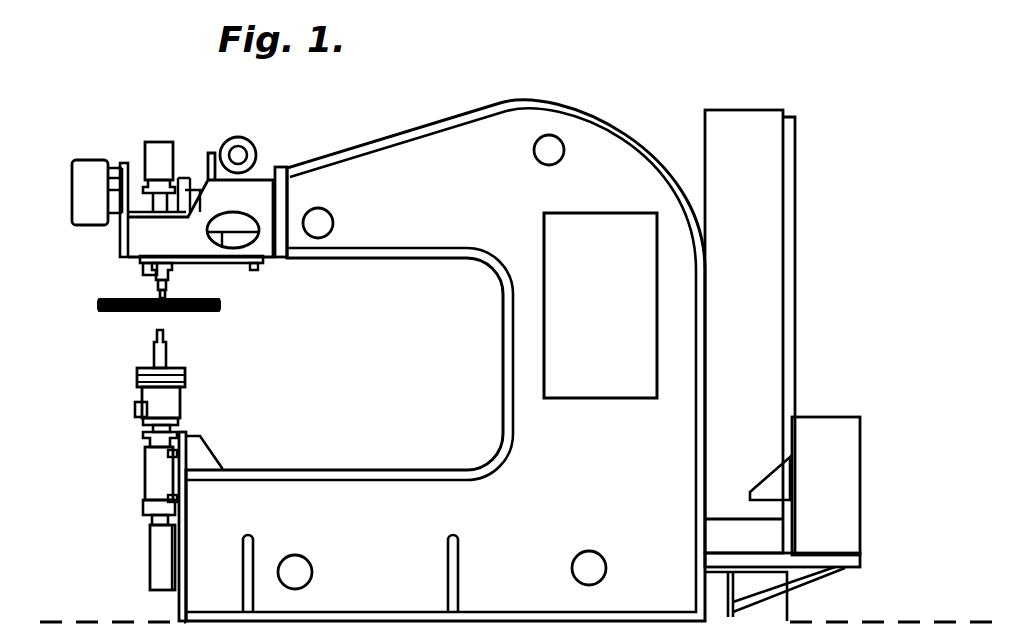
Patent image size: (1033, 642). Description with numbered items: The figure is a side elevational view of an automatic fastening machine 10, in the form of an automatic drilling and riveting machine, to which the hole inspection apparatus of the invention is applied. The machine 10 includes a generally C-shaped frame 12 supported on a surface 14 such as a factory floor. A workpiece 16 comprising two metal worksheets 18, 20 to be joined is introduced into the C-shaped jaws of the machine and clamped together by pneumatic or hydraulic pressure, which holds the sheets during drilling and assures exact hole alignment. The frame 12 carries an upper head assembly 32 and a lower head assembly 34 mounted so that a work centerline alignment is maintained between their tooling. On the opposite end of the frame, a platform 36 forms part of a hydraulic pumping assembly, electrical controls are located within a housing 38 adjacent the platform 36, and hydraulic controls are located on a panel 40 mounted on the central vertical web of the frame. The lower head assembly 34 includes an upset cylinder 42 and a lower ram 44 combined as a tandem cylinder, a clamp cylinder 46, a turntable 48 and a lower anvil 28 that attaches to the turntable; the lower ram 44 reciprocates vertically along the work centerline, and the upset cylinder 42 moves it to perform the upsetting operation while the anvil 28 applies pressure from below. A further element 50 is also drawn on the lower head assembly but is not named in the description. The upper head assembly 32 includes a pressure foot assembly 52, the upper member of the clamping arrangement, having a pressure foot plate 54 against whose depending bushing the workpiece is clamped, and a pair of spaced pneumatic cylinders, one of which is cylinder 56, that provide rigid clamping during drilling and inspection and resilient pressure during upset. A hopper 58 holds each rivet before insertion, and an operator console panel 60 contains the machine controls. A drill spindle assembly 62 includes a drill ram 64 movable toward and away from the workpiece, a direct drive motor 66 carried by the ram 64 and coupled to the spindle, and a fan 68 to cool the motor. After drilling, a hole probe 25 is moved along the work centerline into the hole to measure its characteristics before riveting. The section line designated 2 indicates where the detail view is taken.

The automatic fastening machine 10 is at (636, 102).
The C-shaped frame 12 is at (418, 204).
The surface 14 is at (127, 620).
The workpiece 16 is at (205, 320).
The upper metal worksheet 18 is at (98, 300).
The lower metal worksheet 20 is at (100, 312).
The section line 2 is at (100, 241).
The hole probe 25 is at (187, 292).
The lower anvil 28 is at (157, 334).
The upper head assembly 32 is at (135, 270).
The lower head assembly 34 is at (208, 414).
The platform 36 is at (847, 567).
The housing 38 is at (762, 287).
The panel 40 is at (600, 305).
The upset cylinder 42 is at (152, 542).
The lower ram 44 is at (152, 462).
The clamp cylinder 46 is at (142, 398).
The turntable 48 is at (185, 378).
The side fitting 50 is at (135, 410).
The pressure foot assembly 52 is at (182, 288).
The pressure foot plate 54 is at (152, 308).
The pneumatic cylinder 56 is at (150, 262).
The hopper 58 is at (205, 283).
The operator console panel 60 is at (88, 162).
The drill spindle assembly 62 is at (135, 207).
The drill ram 64 is at (117, 190).
The motor 66 is at (160, 142).
The fan 68 is at (248, 140).